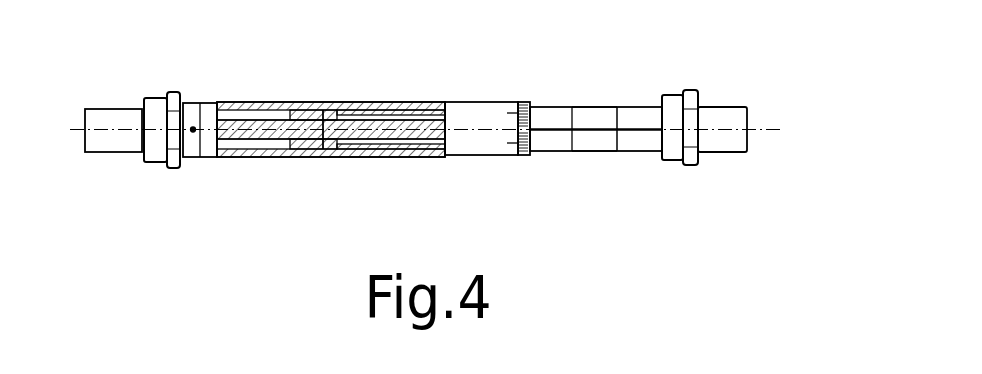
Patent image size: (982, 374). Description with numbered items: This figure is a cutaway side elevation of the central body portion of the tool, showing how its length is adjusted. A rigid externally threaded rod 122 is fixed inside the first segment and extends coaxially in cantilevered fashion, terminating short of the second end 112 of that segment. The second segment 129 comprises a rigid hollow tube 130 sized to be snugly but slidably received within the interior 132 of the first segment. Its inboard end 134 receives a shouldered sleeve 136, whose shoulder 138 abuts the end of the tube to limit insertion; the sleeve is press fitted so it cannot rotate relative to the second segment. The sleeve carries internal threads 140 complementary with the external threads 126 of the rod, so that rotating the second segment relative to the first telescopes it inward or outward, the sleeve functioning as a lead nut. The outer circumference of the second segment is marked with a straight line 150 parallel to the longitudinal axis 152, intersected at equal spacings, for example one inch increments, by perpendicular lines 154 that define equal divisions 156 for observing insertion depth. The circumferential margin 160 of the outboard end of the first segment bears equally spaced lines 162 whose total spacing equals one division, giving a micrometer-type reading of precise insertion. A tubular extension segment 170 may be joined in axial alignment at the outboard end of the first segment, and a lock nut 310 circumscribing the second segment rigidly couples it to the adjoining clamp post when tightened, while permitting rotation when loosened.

The second end of the first segment 112 is at (515, 157).
The externally threaded rod 122 is at (400, 157).
The external threads 126 is at (225, 108).
The second segment 129 is at (565, 93).
The hollow tube 130 is at (368, 103).
The interior of the first segment 132 is at (245, 108).
The inboard end of the second segment 134 is at (313, 150).
The shouldered sleeve 136 is at (315, 157).
The shoulder 138 is at (267, 157).
The internal threads 140 is at (323, 128).
The straight line 150 is at (587, 113).
The longitudinal axis 152 is at (765, 128).
The lines 154 is at (622, 107).
The divisions 156 is at (587, 151).
The circumferential margin 160 is at (463, 103).
The lines 162 is at (513, 155).
The tubular extension segment 170 is at (120, 108).
The lock nut 310 is at (155, 162).